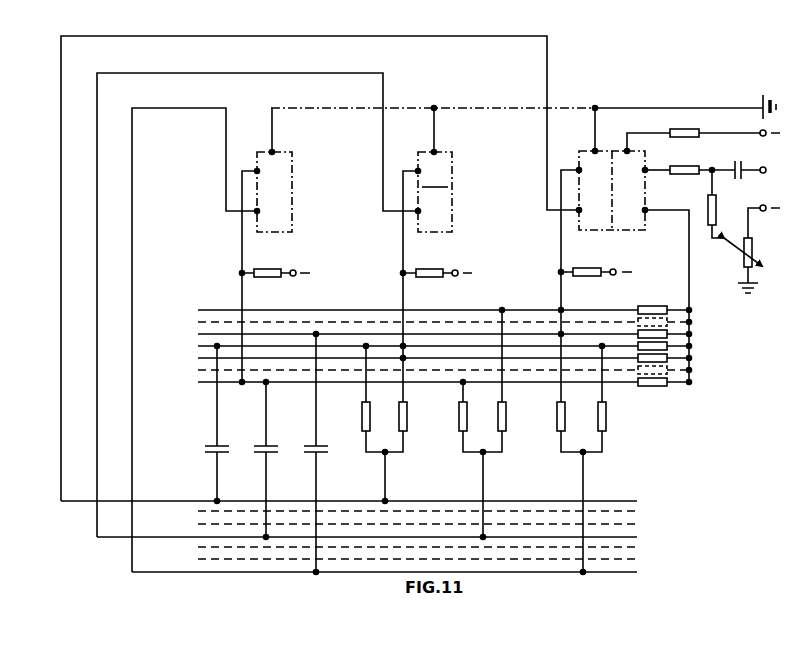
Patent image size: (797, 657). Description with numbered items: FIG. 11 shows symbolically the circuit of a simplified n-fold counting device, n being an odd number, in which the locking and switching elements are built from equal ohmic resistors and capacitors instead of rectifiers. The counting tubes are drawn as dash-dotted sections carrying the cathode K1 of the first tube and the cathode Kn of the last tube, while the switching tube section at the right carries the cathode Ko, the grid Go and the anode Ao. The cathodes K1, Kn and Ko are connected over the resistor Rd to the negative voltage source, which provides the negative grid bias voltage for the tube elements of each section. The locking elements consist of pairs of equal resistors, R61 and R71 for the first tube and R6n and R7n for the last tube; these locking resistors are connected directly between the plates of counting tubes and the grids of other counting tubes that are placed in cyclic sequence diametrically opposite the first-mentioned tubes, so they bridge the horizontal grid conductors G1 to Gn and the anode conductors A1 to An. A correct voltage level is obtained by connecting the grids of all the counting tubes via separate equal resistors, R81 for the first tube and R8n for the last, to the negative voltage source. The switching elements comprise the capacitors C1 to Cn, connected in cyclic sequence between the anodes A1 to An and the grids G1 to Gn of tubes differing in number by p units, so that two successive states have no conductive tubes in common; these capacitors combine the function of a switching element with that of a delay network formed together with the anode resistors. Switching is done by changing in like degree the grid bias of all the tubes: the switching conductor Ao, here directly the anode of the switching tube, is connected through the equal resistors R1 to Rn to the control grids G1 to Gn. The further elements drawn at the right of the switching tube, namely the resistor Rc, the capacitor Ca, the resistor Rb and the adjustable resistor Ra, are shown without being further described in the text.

The cathode of counting tube n Kn is at (274, 185).
The grid resistor R8 of counting tube n R8n is at (275, 266).
The cathode of counting tube 1 K1 is at (612, 182).
The cathode of switching tube section 0 Ko is at (641, 142).
The grid of switching tube Go is at (657, 163).
The switching conductor Ao is at (677, 297).
The resistor Rd is at (725, 126).
The resistor Rc is at (702, 163).
The capacitor Ca is at (752, 162).
The resistor Rb is at (735, 218).
The potentiometer Ra is at (759, 249).
The grid resistor R8 of counting tube 1 R81 is at (596, 265).
The control grid of counting tube 1 G1 is at (433, 311).
The control grid of counting tube n Gn is at (433, 384).
The resistor R1 is at (652, 303).
The resistor Rn is at (652, 390).
The capacitor C1 is at (211, 424).
The capacitor Cn is at (310, 453).
The locking resistor R6 of counting tube 1 R61 is at (362, 398).
The locking resistor R7 of counting tube 1 R71 is at (393, 427).
The locking resistor R6 of counting tube n R6n is at (574, 427).
The locking resistor R7 of counting tube n R7n is at (607, 398).
The anode of counting tube 1 A1 is at (361, 502).
The anode of counting tube n An is at (396, 573).